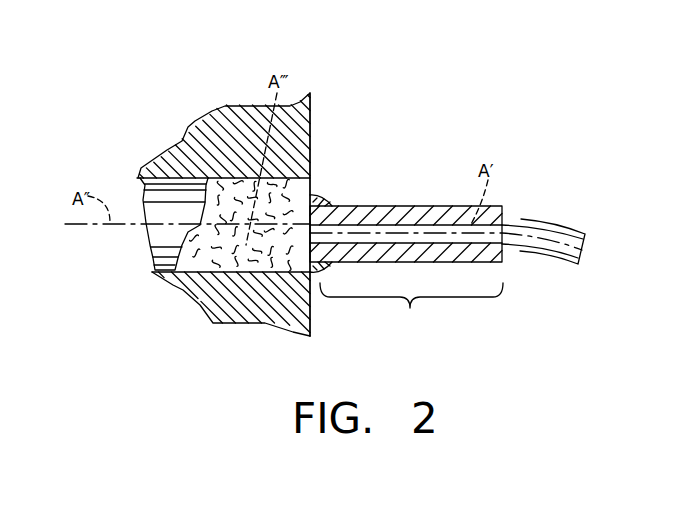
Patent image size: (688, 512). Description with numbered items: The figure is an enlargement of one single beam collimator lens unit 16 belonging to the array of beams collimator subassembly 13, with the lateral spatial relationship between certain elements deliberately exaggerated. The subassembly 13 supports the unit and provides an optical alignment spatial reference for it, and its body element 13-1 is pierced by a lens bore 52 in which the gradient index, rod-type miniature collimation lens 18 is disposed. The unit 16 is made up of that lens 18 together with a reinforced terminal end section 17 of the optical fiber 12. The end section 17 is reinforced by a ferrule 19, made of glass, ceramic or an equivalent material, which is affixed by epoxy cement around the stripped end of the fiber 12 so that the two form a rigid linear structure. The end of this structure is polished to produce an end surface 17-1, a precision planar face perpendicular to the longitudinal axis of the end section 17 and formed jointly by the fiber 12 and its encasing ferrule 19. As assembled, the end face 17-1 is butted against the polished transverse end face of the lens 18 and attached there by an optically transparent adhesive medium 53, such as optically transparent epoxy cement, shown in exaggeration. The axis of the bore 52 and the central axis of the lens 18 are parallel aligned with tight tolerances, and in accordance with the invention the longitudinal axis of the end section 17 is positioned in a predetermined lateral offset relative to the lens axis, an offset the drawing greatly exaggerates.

The optical fiber 12 is at (515, 218).
The array of beams collimator subassembly 13 is at (400, 97).
The body element 13-1 is at (208, 297).
The single beam collimator lens unit 16 is at (367, 197).
The reinforced terminal end section 17 is at (411, 310).
The end surface 17-1 is at (300, 270).
The rod-type collimation lens 18 is at (227, 173).
The ferrule 19 is at (416, 206).
The lens bore 52 is at (154, 271).
The optically transparent adhesive medium 53 is at (314, 198).